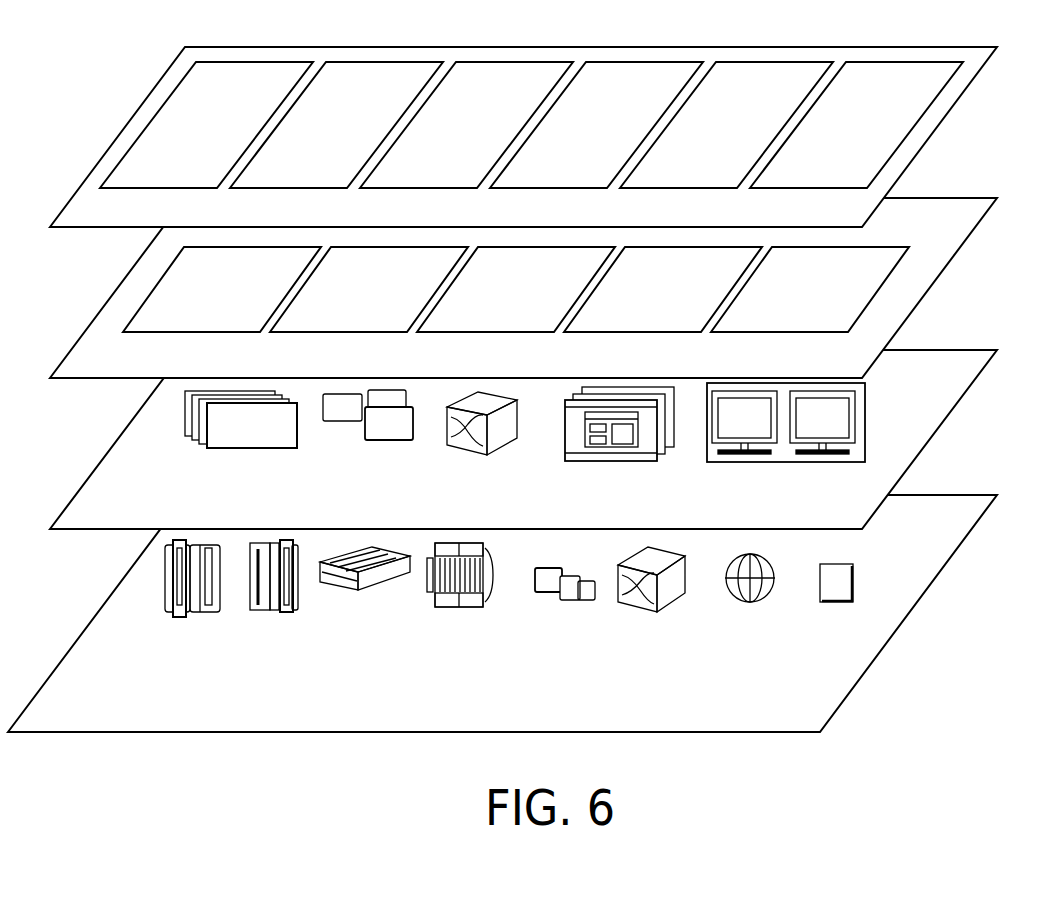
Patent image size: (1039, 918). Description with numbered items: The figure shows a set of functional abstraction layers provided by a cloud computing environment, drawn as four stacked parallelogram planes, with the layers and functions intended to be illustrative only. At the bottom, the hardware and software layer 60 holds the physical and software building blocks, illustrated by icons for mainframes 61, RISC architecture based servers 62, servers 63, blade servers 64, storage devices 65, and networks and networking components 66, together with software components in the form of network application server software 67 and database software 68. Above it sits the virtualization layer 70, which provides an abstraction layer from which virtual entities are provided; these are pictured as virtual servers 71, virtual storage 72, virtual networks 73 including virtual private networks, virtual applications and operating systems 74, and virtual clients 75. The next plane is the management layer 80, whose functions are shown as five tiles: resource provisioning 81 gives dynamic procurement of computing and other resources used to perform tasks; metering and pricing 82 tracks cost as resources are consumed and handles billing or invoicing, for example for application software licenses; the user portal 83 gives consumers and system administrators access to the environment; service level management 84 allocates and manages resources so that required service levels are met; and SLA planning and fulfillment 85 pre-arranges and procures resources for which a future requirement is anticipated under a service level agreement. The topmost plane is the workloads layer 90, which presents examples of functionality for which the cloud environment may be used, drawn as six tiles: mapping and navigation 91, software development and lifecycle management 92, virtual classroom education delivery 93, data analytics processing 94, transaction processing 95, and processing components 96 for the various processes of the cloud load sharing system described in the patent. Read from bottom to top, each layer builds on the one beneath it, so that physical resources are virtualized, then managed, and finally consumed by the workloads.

The hardware and software layer 60 is at (55, 734).
The mainframes 61 is at (203, 612).
The RISC architecture based servers 62 is at (271, 612).
The servers 63 is at (354, 591).
The blade servers 64 is at (458, 608).
The storage devices 65 is at (560, 601).
The networks and networking components 66 is at (645, 612).
The network application server software 67 is at (748, 603).
The database software 68 is at (832, 604).
The virtualization layer 70 is at (97, 531).
The virtual servers 71 is at (243, 450).
The virtual storage 72 is at (373, 441).
The virtual networks 73 is at (483, 455).
The virtual applications and operating systems 74 is at (610, 462).
The virtual clients 75 is at (778, 462).
The management layer 80 is at (96, 380).
The resource provisioning 81 is at (210, 298).
The metering and pricing 82 is at (357, 298).
The user portal 83 is at (504, 298).
The service level management 84 is at (651, 298).
The SLA planning and fulfillment 85 is at (798, 298).
The workloads layer 90 is at (96, 229).
The mapping and navigation 91 is at (194, 133).
The software development and lifecycle management 92 is at (324, 133).
The virtual classroom education delivery 93 is at (454, 133).
The data analytics processing 94 is at (584, 133).
The transaction processing 95 is at (714, 133).
The processing components 96 is at (844, 133).